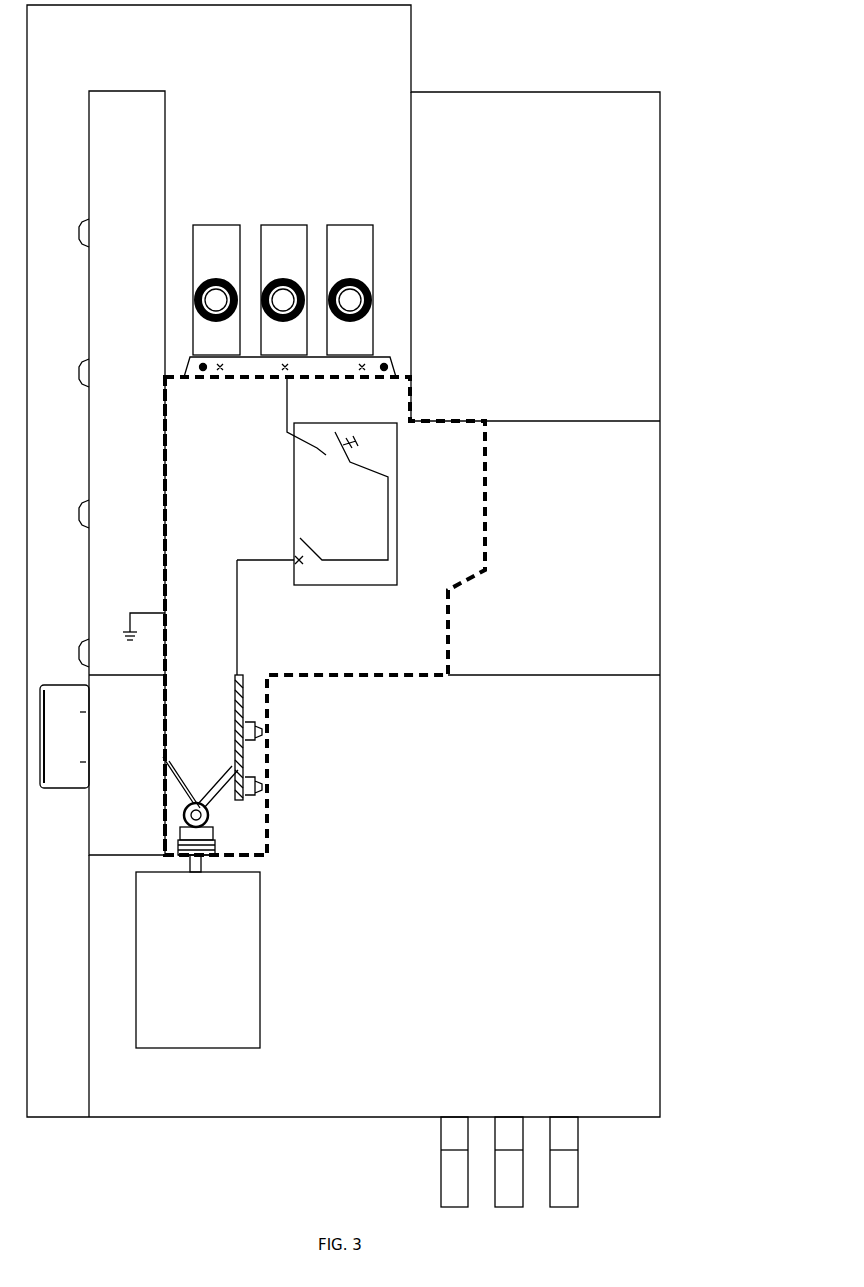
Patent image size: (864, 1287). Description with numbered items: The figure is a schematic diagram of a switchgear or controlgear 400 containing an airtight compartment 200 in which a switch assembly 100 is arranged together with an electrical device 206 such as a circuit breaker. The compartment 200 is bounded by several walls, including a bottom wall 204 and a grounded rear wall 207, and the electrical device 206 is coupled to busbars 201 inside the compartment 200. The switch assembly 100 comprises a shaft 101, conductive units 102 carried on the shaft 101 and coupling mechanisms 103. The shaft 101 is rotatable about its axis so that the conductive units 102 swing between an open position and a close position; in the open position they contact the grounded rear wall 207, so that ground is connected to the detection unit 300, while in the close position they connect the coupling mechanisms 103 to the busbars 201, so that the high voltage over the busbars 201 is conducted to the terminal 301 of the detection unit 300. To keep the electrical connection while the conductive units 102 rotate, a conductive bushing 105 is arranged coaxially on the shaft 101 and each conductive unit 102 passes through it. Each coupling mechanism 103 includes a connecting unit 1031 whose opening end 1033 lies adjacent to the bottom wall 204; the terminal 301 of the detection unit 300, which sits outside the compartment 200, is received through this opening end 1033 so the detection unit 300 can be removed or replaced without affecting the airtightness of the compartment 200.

The switchgear or controlgear 400 is at (450, 45).
The compartment 200 is at (163, 376).
The rear wall 207 is at (165, 510).
The electrical device 206 is at (373, 577).
The switch assembly 100 is at (197, 733).
The conductive unit 102 is at (225, 767).
The busbars 201 is at (258, 735).
The shaft 101 is at (185, 806).
The conductive bushing 105 is at (210, 813).
The connecting unit 1031 is at (184, 835).
The coupling mechanism 103 is at (216, 834).
The bottom wall 204 is at (238, 855).
The opening end 1033 is at (183, 857).
The terminal 301 is at (201, 862).
The detection unit 300 is at (233, 893).